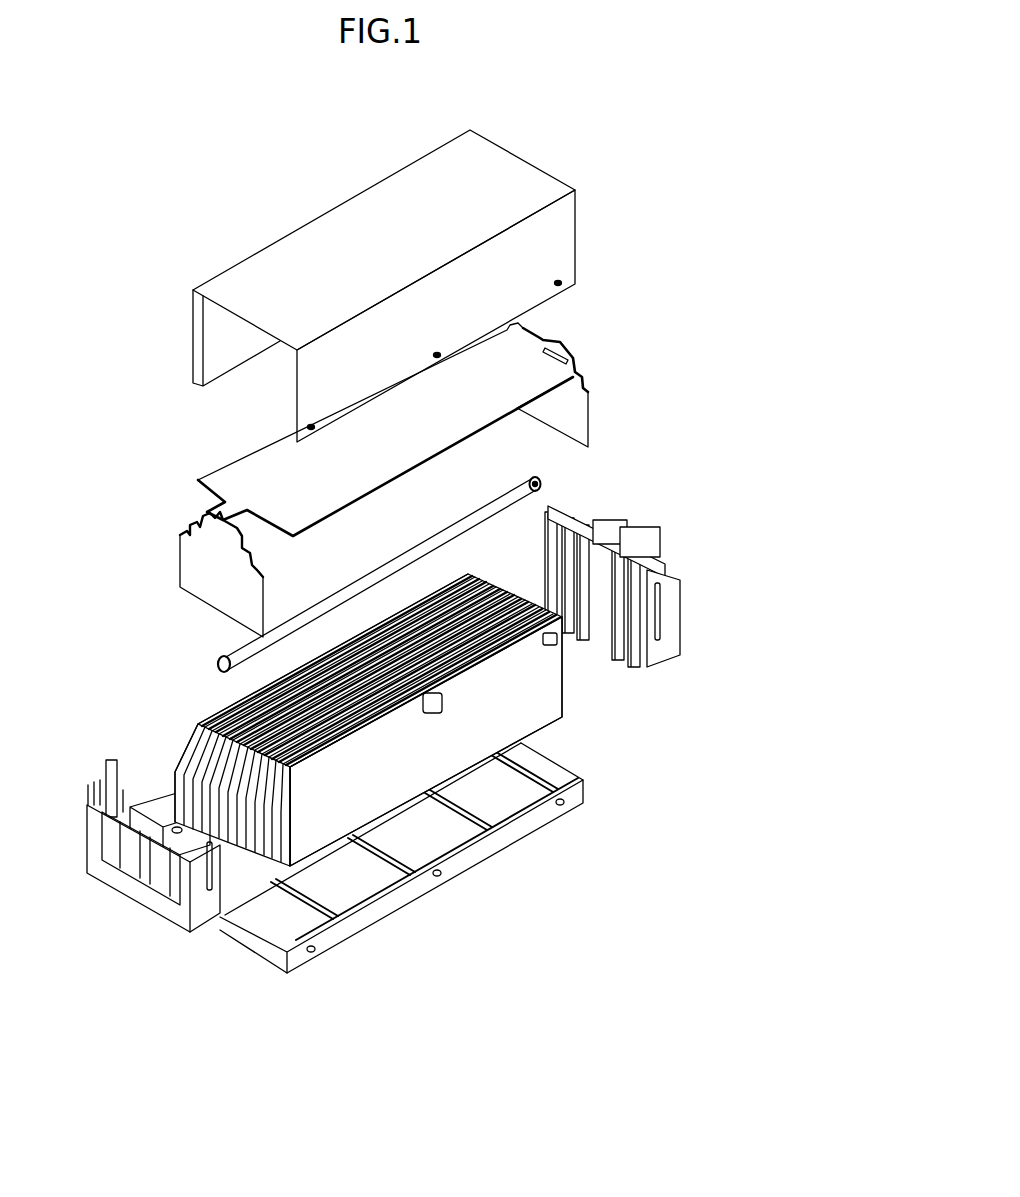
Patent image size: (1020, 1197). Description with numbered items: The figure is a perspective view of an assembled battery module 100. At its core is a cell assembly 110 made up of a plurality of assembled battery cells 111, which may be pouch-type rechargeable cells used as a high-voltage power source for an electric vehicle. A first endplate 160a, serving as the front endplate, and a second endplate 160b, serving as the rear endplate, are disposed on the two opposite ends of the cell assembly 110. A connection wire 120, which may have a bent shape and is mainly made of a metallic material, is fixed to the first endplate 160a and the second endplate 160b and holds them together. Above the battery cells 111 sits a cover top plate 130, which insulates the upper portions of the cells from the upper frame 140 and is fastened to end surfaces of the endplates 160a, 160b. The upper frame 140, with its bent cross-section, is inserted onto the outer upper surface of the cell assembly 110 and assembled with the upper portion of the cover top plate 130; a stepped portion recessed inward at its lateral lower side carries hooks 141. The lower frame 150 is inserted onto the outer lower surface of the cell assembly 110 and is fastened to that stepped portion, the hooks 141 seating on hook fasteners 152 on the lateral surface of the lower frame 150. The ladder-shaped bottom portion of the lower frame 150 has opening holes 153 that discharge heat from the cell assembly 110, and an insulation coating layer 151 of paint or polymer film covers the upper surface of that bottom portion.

The battery module 100 is at (155, 152).
The cell assembly 110 is at (380, 720).
The battery cell 111 is at (227, 707).
The connection wire 120 is at (531, 485).
The cover top plate 130 is at (200, 563).
The upper frame 140 is at (371, 256).
The hook 141 is at (309, 424).
The lower frame 150 is at (402, 909).
The insulation coating layer 151 is at (264, 947).
The hook fastener 152 is at (313, 952).
The opening hole 153 is at (365, 878).
The first endplate 160a is at (138, 892).
The second endplate 160b is at (668, 572).